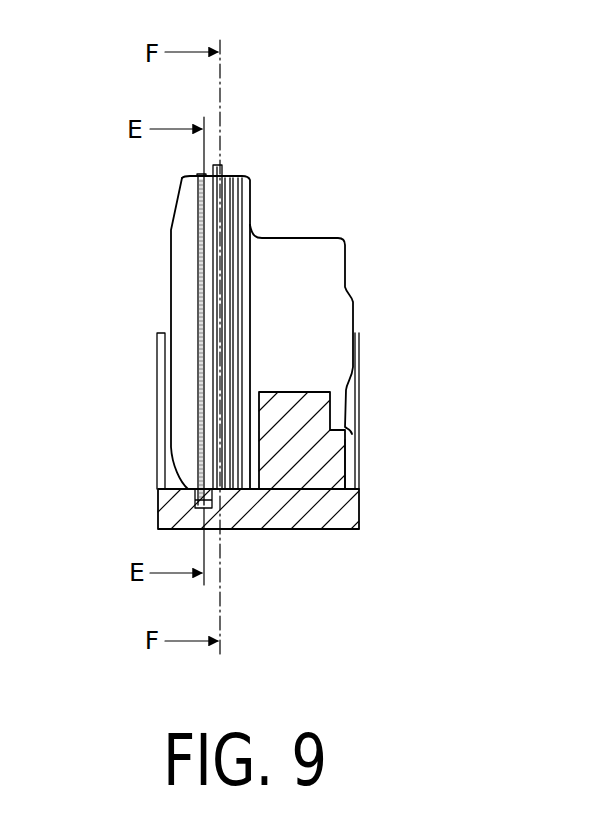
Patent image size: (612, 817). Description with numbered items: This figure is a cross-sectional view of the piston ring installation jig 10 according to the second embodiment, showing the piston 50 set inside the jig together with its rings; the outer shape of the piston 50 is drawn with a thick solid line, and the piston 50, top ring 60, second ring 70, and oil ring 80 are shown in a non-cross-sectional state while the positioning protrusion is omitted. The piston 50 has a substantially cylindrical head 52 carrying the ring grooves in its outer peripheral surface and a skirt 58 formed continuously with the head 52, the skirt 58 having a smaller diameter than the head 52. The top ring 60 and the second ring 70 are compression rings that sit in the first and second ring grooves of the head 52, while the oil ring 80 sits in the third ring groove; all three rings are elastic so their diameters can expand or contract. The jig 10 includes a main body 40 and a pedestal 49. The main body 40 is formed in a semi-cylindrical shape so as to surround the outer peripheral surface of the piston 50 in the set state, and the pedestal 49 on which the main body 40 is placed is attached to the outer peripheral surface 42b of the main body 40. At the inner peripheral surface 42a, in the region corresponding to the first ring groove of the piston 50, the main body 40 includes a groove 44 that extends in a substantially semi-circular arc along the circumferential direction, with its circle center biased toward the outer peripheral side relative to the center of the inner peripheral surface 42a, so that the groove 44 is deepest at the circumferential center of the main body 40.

The piston ring installation jig 10 is at (136, 492).
The main body 40 is at (283, 530).
The inner peripheral surface 42a is at (346, 472).
The outer peripheral surface 42b is at (352, 531).
The groove 44 is at (195, 497).
The pedestal 49 is at (344, 439).
The piston 50 is at (170, 262).
The head 52 is at (182, 178).
The skirt 58 is at (318, 238).
The top ring 60 is at (198, 175).
The second ring 70 is at (221, 166).
The oil ring 80 is at (236, 176).